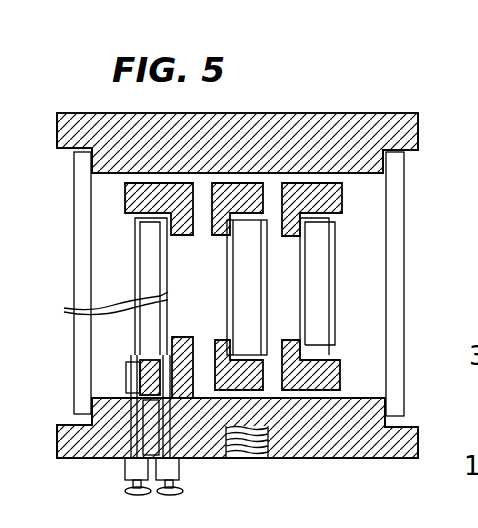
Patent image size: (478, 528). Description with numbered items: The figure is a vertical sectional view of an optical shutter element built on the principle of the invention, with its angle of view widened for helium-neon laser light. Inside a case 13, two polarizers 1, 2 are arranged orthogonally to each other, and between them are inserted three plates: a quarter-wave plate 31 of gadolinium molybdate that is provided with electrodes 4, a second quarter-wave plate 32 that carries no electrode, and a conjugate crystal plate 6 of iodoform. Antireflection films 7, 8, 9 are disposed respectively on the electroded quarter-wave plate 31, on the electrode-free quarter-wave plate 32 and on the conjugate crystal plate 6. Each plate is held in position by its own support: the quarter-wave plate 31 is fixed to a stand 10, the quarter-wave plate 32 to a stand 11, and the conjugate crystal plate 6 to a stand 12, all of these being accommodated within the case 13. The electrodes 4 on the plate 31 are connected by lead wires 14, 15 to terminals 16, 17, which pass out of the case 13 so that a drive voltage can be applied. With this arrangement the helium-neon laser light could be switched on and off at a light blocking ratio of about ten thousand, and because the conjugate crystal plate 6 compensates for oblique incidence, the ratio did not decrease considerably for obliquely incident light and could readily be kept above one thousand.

The polarizer 1 is at (80, 362).
The polarizer 2 is at (396, 330).
The electrodes 4 is at (133, 286).
The conjugate crystal plate 6 is at (238, 287).
The antireflection film 7 is at (107, 310).
The antireflection film 8 is at (336, 286).
The antireflection film 9 is at (262, 273).
The stand 10 is at (163, 183).
The stand 11 is at (311, 183).
The stand 12 is at (241, 183).
The case 13 is at (376, 127).
The lead wire 14 is at (140, 362).
The lead wire 15 is at (183, 337).
The terminal 16 is at (128, 470).
The terminal 17 is at (178, 475).
The quarter-wave plate 31 is at (150, 238).
The quarter-wave plate 32 is at (316, 245).